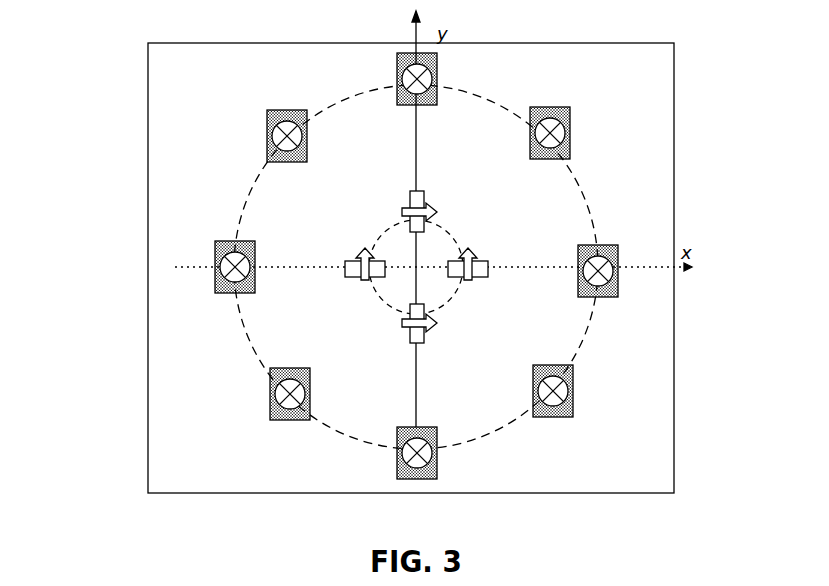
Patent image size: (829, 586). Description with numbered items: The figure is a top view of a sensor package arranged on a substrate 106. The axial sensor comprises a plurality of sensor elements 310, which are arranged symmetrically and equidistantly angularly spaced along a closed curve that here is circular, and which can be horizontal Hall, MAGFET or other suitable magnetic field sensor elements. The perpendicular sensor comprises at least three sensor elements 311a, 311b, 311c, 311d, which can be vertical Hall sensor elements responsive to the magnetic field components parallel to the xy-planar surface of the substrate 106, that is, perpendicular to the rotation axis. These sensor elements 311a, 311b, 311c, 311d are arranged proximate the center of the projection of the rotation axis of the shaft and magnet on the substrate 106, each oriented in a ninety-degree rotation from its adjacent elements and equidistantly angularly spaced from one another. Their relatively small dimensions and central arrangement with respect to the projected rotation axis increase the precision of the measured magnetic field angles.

The substrate 106 is at (674, 458).
The sensor elements 310 is at (570, 128).
The sensor element 311a is at (440, 210).
The sensor element 311b is at (482, 283).
The sensor element 311c is at (387, 330).
The sensor element 311d is at (340, 247).